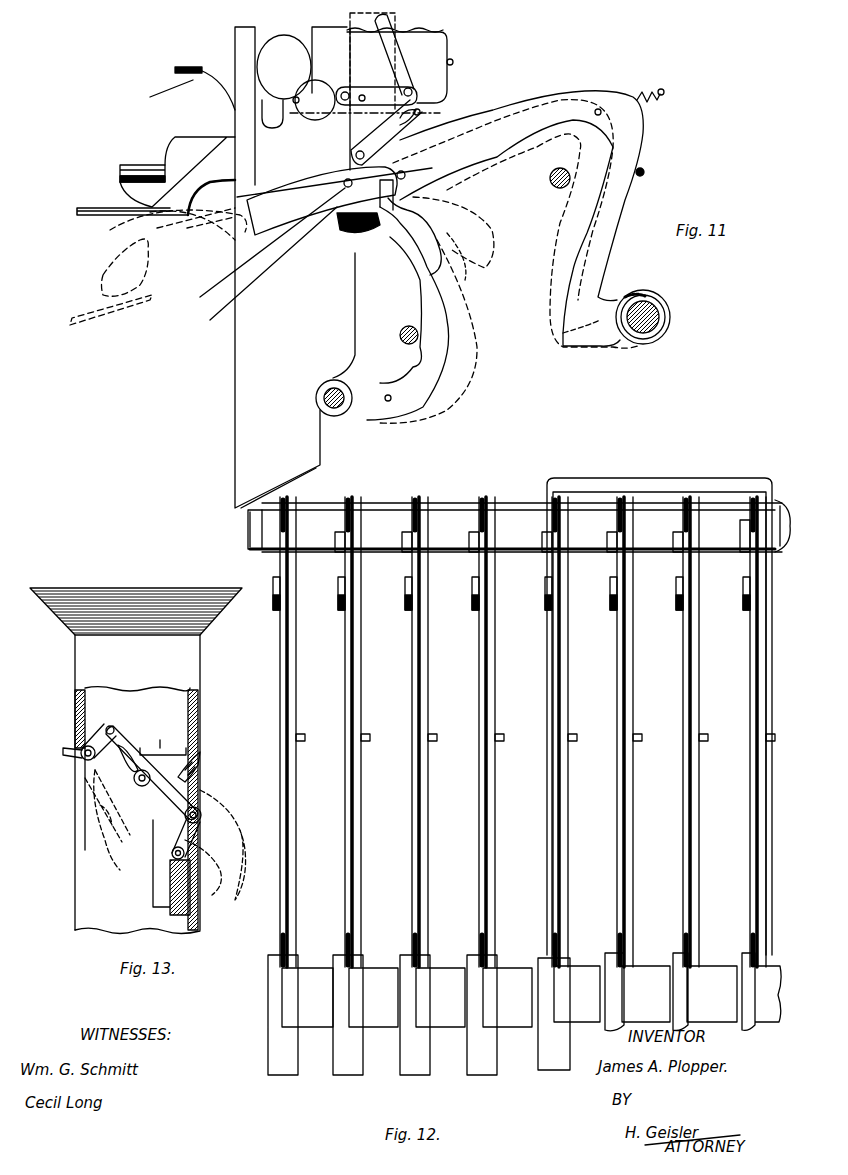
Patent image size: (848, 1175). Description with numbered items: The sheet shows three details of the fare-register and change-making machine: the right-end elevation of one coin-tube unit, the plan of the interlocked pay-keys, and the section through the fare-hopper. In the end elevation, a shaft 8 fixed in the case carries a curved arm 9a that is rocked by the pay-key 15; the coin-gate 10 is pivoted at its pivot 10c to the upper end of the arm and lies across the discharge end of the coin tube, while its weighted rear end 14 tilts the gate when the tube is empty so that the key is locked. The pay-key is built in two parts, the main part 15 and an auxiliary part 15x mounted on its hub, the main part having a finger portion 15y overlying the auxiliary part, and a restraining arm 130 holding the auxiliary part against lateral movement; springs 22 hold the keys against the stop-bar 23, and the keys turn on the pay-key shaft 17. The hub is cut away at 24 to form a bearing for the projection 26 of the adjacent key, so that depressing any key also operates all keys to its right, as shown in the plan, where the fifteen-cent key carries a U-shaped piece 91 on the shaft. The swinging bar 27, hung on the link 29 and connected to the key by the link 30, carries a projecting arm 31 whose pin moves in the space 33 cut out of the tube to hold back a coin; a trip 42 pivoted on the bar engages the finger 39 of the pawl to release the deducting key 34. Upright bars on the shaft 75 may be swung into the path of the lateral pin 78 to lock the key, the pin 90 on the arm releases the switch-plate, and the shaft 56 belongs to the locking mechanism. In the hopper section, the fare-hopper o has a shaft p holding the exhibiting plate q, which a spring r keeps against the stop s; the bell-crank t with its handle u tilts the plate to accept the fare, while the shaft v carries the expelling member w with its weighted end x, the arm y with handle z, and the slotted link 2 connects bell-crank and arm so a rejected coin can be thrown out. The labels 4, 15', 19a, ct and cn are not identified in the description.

In FIG. 11, the frame plate 4 is at (250, 425).
In FIG. 11, the shaft 8 is at (316, 398).
In FIG. 11, the arm 9a is at (440, 330).
In FIG. 11, the coin-gate 10 is at (503, 237).
In FIG. 11, the pivot 10c is at (260, 269).
In FIG. 11, the weight 14 is at (400, 202).
In FIG. 11, the pay-key 15 is at (146, 201).
In FIG. 12, the pay-key 15 is at (427, 684).
In FIG. 11, the auxiliary part of pay-key 15x is at (640, 137).
In FIG. 12, the auxiliary part of pay-key 15x is at (297, 662).
In FIG. 11, the finger portion 15y is at (120, 180).
In FIG. 12, the finger portion 15y is at (352, 1010).
In FIG. 12, the key lever 15' is at (702, 863).
In FIG. 11, the pay-key shaft 17 is at (660, 317).
In FIG. 12, the pay-key shaft 17 is at (252, 552).
In FIG. 11, the stop 19a is at (420, 352).
In FIG. 11, the spring 22 is at (664, 94).
In FIG. 11, the stop-bar 23 is at (645, 172).
In FIG. 11, the cut-away portion of hub 24 is at (643, 345).
In FIG. 11, the projecting portion of hub 26 is at (635, 294).
In FIG. 12, the projecting portion of hub 26 is at (337, 553).
In FIG. 11, the swinging bar 27 is at (453, 62).
In FIG. 11, the link 29 is at (410, 73).
In FIG. 11, the link 30 is at (390, 118).
In FIG. 11, the projecting arm 31 is at (372, 88).
In FIG. 11, the space 33 is at (308, 96).
In FIG. 11, the deducting key 34 is at (165, 90).
In FIG. 11, the finger 39 is at (346, 98).
In FIG. 11, the trip 42 is at (427, 111).
In FIG. 11, the shaft 56 is at (549, 178).
In FIG. 11, the shaft 75 is at (400, 334).
In FIG. 11, the pin 78 is at (405, 170).
In FIG. 12, the pin 78 is at (306, 738).
In FIG. 11, the pin 90 is at (350, 220).
In FIG. 12, the U-shaped piece 91 is at (650, 490).
In FIG. 11, the restraining arm 130 is at (572, 340).
In FIG. 12, the restraining arm 130 is at (272, 590).
In FIG. 11, the cam track ct is at (260, 62).
In FIG. 11, the cam cn is at (222, 228).
In FIG. 13, the fare-hopper o is at (137, 761).
In FIG. 13, the shaft p is at (80, 752).
In FIG. 13, the exhibiting plate q is at (155, 738).
In FIG. 13, the spring r is at (64, 740).
In FIG. 13, the stop s is at (192, 746).
In FIG. 13, the bell-crank t is at (88, 725).
In FIG. 13, the crank handle u is at (134, 780).
In FIG. 13, the shaft v is at (186, 850).
In FIG. 13, the expelling member w is at (205, 775).
In FIG. 13, the weighted end x is at (170, 888).
In FIG. 13, the arm y is at (200, 834).
In FIG. 13, the crank handle z is at (203, 814).
In FIG. 13, the slotted link 2 is at (205, 795).